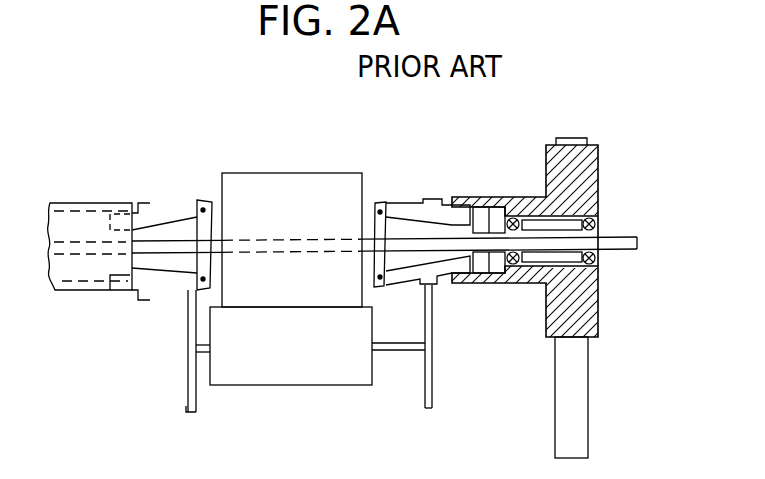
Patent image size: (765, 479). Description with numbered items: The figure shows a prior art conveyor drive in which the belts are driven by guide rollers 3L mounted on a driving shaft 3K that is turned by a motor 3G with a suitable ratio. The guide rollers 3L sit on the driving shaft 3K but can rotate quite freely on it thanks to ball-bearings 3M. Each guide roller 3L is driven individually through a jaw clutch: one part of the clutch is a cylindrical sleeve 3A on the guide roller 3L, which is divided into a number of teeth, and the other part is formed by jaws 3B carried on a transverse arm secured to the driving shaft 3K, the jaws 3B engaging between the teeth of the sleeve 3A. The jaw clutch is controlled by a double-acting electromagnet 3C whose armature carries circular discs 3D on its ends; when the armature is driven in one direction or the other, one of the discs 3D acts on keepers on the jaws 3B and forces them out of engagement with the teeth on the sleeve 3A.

The cylindrical sleeve 3A is at (72, 203).
The jaws 3B is at (153, 201).
The motor 3G is at (282, 200).
The double-acting electromagnet 3C is at (291, 359).
The circular discs 3D is at (429, 410).
The driving shaft 3K is at (494, 274).
The guide rollers 3L is at (577, 138).
The ball-bearings 3M is at (598, 261).